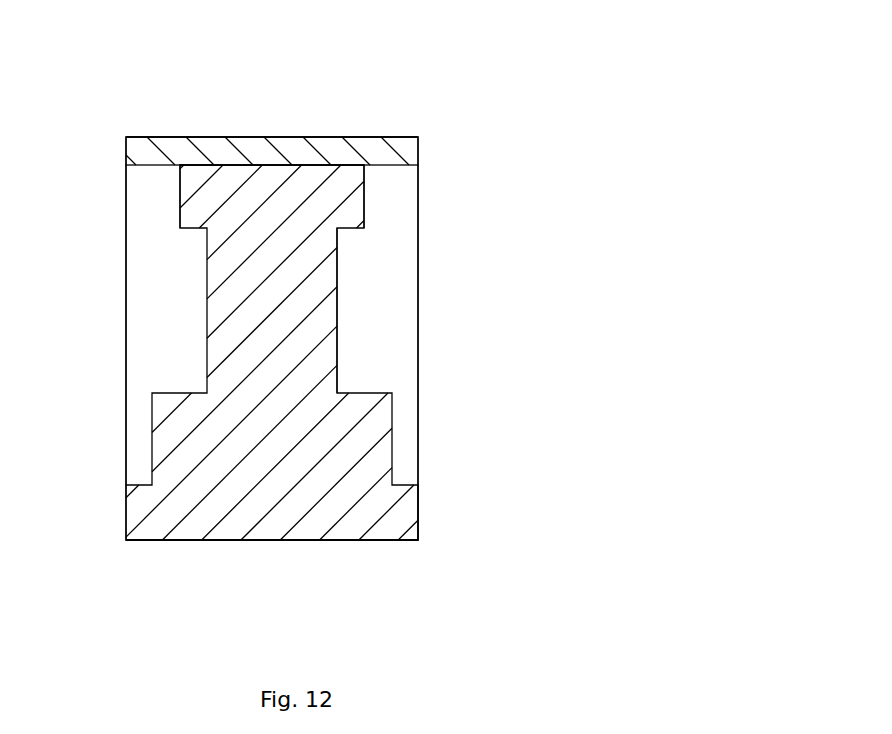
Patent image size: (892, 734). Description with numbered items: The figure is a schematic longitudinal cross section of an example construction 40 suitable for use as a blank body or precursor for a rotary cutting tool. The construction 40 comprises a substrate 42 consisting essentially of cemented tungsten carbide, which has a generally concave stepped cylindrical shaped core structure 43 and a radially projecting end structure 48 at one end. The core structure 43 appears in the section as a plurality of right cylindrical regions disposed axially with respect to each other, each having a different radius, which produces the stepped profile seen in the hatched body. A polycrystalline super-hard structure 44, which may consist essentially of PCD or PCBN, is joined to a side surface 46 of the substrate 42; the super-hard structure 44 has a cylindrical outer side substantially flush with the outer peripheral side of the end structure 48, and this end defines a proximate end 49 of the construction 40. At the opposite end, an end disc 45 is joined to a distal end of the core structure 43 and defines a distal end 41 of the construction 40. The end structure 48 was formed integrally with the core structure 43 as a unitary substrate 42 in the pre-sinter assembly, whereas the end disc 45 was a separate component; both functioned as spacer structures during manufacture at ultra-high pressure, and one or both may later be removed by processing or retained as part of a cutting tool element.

The construction 40 is at (456, 87).
The distal end 41 is at (280, 141).
The substrate 42 is at (333, 198).
The core structure 43 is at (308, 299).
The super-hard structure 44 is at (155, 244).
The end disc 45 is at (413, 145).
The side surface 46 is at (333, 359).
The end structure 48 is at (418, 506).
The proximate end 49 is at (282, 540).